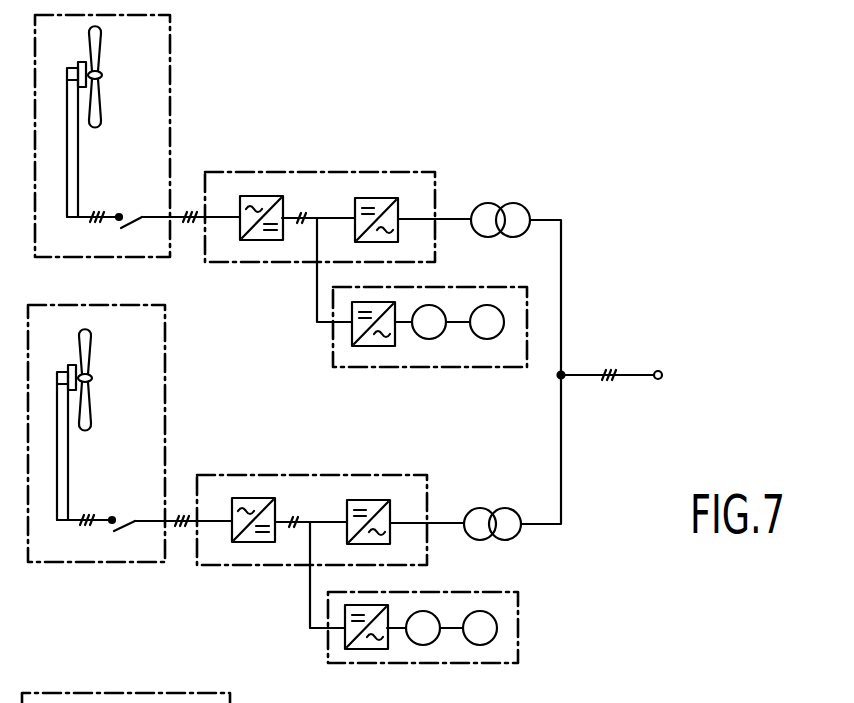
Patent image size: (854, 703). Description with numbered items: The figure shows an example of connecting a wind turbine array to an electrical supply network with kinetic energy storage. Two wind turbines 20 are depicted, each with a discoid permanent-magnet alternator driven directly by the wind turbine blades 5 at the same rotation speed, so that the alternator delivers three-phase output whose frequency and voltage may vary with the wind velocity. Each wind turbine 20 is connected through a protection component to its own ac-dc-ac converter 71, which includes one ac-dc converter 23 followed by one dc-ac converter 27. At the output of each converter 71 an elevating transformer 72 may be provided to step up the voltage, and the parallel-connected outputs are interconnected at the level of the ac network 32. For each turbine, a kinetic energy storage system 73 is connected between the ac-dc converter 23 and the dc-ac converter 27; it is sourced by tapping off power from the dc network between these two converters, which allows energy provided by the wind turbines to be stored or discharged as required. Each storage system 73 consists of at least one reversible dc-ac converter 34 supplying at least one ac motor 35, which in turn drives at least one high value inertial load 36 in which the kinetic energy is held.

The wind turbine blades 5 is at (100, 44).
The wind turbine 20 is at (72, 153).
The ac-dc converter 23 is at (262, 196).
The dc-ac converter 27 is at (370, 198).
The ac-dc-ac converter 71 is at (403, 172).
The elevating transformer 72 is at (500, 204).
The kinetic energy storage system 73 is at (333, 343).
The reversible dc-ac converter 34 is at (373, 346).
The ac motor 35 is at (429, 339).
The high value inertial load 36 is at (488, 339).
The ac network 32 is at (632, 377).